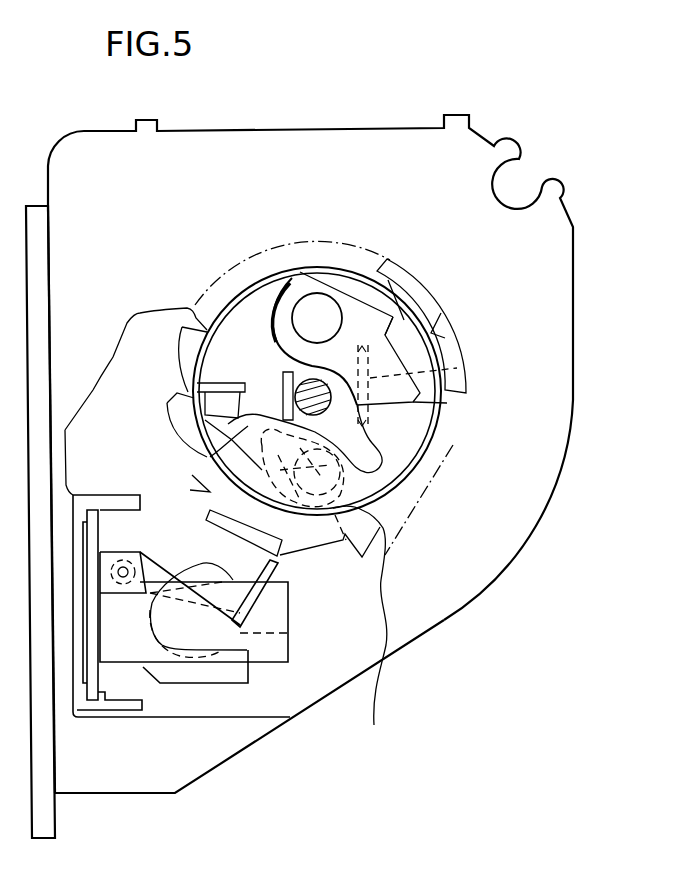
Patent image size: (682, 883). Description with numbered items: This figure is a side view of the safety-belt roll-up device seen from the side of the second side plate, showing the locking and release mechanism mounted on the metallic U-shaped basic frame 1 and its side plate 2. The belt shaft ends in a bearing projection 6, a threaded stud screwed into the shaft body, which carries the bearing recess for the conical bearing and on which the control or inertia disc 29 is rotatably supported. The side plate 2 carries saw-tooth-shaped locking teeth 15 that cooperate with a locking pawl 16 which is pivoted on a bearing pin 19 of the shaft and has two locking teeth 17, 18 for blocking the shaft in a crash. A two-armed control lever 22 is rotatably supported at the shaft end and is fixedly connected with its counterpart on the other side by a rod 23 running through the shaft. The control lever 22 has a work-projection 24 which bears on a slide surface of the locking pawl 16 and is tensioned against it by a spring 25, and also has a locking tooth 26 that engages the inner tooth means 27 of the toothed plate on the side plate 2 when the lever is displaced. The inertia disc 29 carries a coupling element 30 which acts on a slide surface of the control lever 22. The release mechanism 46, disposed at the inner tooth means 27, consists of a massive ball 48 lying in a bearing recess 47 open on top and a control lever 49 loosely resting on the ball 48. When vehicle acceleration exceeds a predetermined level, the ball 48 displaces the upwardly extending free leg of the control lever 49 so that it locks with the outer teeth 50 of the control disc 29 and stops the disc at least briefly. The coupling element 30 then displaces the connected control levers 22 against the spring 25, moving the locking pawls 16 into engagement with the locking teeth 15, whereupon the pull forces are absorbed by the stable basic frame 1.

The basic frame 1 is at (218, 768).
The side plate 2 is at (183, 148).
The shaft projection 6 is at (288, 383).
The saw-tooth-shaped locking teeth 15 is at (436, 336).
The locking pawl 16 is at (274, 302).
The locking tooth 17 is at (387, 300).
The locking tooth 18 is at (426, 400).
The bearing pin 19 is at (322, 302).
The control lever 22 is at (396, 458).
The rod 23 is at (330, 546).
The work-projection 24 is at (418, 418).
The spring 25 is at (452, 374).
The locking tooth 26 is at (200, 452).
The inner tooth means 27 is at (186, 393).
The inertia disc 29 is at (381, 603).
The coupling element 30 is at (213, 408).
The release mechanism 46 is at (110, 725).
The bearing recess 47 is at (218, 682).
The ball 48 is at (288, 633).
The control lever 49 is at (280, 568).
The outer teeth 50 is at (276, 550).